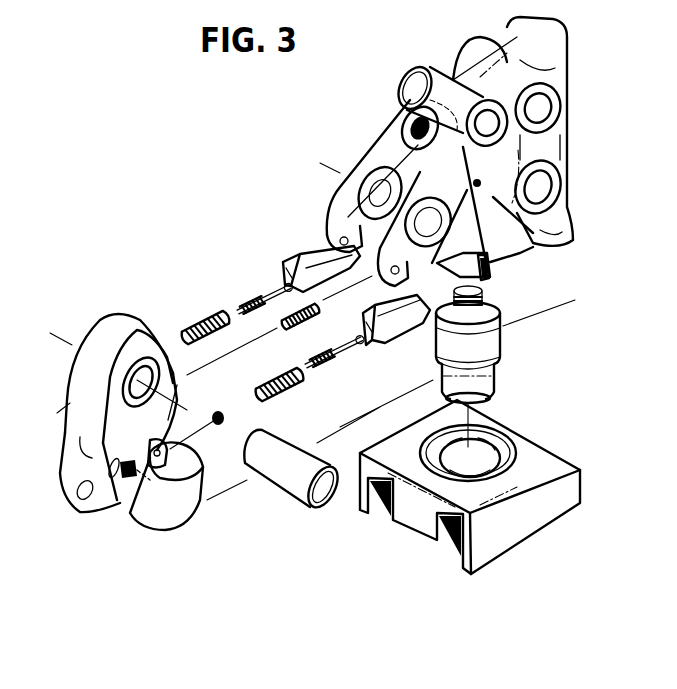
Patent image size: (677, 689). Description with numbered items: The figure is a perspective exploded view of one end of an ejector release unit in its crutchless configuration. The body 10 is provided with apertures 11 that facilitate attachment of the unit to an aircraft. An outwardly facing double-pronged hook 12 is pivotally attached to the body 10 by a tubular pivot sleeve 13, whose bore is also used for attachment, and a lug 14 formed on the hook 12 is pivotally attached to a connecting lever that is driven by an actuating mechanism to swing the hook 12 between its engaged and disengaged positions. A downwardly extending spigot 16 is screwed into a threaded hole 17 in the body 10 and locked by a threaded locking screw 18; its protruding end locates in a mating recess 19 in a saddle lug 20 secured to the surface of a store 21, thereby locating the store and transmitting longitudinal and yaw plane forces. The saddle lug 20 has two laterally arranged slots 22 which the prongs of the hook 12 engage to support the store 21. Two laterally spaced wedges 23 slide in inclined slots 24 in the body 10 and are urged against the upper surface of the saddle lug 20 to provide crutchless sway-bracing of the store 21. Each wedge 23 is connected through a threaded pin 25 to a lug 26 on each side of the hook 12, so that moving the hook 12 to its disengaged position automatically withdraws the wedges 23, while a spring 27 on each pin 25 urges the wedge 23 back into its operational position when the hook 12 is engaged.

The body 10 is at (367, 157).
The apertures 11 is at (542, 108).
The double-pronged hook 12 is at (120, 323).
The tubular pivot sleeve 13 is at (288, 460).
The lug 14 is at (63, 497).
The spigot 16 is at (487, 345).
The threaded hole 17 is at (483, 177).
The threaded locking screw 18 is at (304, 316).
The mating recess 19 is at (463, 473).
The saddle lug 20 is at (530, 470).
The store 21 is at (268, 578).
The slots 22 is at (380, 505).
The wedges 23 is at (313, 260).
The inclined slots 24 is at (493, 278).
The threaded pin 25 is at (277, 288).
The lug 26 is at (160, 440).
The spring 27 is at (207, 317).